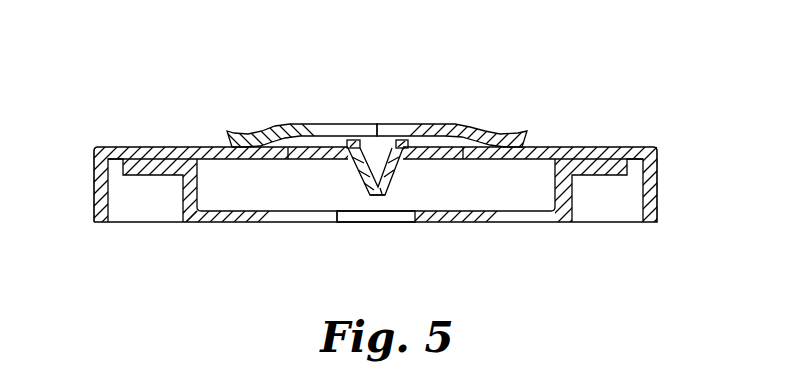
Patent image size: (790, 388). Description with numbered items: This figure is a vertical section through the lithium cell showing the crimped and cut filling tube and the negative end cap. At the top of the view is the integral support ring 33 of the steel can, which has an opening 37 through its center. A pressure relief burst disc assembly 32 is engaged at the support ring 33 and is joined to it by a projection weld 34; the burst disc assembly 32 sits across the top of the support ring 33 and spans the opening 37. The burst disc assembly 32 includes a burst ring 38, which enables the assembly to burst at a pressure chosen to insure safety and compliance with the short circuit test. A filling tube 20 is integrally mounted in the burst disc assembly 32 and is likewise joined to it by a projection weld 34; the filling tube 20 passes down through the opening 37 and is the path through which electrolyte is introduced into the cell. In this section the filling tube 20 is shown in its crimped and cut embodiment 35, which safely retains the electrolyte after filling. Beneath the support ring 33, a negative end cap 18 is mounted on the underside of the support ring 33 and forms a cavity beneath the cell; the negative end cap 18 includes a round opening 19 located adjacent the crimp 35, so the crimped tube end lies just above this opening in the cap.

The negative end cap 18 is at (490, 223).
The round opening 19 is at (343, 224).
The filling tube 20 is at (353, 162).
The burst disc assembly 32 is at (267, 123).
The support ring 33 is at (153, 147).
The projection weld 34 is at (226, 147).
The crimped and cut filling tube 35 is at (383, 196).
The opening 37 is at (463, 152).
The burst ring 38 is at (467, 123).